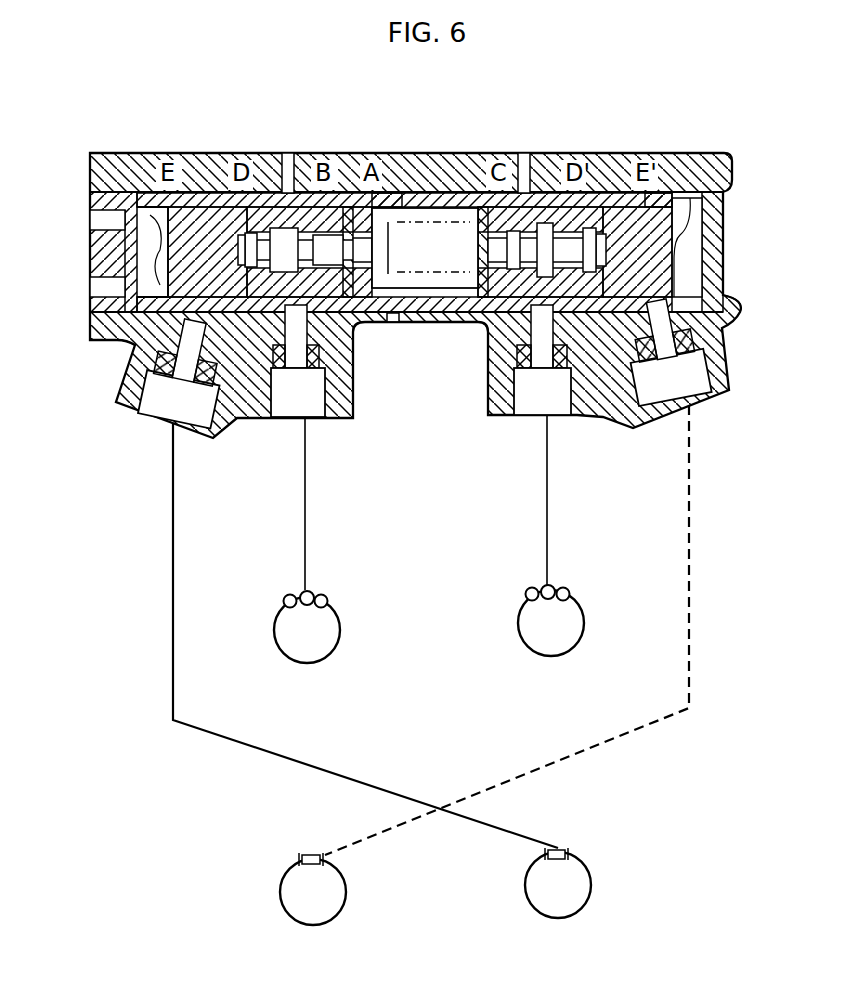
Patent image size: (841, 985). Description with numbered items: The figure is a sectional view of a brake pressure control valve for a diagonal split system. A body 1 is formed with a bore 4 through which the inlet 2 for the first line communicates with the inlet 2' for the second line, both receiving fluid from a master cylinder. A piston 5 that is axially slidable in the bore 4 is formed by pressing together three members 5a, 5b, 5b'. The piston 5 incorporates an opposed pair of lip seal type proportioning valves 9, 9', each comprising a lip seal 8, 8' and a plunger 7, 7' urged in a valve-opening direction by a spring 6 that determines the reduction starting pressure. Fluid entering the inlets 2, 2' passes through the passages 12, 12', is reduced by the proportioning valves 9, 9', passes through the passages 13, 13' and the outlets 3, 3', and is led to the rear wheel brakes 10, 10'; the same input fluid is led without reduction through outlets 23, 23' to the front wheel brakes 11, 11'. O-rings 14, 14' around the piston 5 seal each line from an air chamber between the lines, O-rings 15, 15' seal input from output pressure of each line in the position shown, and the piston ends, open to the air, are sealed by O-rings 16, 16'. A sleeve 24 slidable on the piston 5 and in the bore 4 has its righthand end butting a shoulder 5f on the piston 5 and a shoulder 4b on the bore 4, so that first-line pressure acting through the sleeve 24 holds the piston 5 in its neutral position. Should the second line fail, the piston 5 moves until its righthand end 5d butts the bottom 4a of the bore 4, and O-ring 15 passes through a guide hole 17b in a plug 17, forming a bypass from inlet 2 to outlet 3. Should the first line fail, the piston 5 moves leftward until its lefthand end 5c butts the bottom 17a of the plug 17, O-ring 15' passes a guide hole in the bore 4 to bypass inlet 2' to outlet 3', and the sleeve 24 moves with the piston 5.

The body 1 is at (728, 298).
The inlet for the first line 2 is at (308, 179).
The inlet for the second line 2' is at (545, 180).
The outlet 3 is at (179, 428).
The outlet 3' is at (684, 403).
The bore 4 is at (663, 207).
The bottom of the bore 4a is at (700, 246).
The shoulder on the bore 4b is at (398, 310).
The piston 5 is at (450, 207).
The piston member 5a is at (427, 205).
The piston member 5b is at (270, 194).
The piston member 5b' is at (575, 194).
The lefthand end of the piston 5c is at (153, 200).
The righthand end of the piston 5d is at (700, 207).
The shoulder on the piston 5f is at (400, 207).
The spring 6 is at (467, 323).
The plunger 7 is at (333, 194).
The plunger 7' is at (495, 194).
The lip seal 8 is at (242, 178).
The lip seal 8' is at (583, 179).
The proportioning valve 9 is at (369, 357).
The proportioning valve 9' is at (475, 362).
The rear wheel brake 10 is at (566, 866).
The rear wheel brake 10' is at (313, 872).
The front wheel brake 11 is at (318, 604).
The front wheel brake 11' is at (542, 598).
The passage 12 is at (286, 182).
The passage 12' is at (553, 182).
The passage 13 is at (203, 418).
The passage 13' is at (647, 397).
The O-ring 14 is at (355, 177).
The O-ring 14' is at (502, 184).
The O-ring 15 is at (227, 402).
The O-ring 15' is at (622, 382).
The O-ring 16 is at (108, 398).
The O-ring 16' is at (748, 333).
The plug 17 is at (130, 195).
The bottom of the plug 17a is at (140, 252).
The guide hole 17b is at (133, 287).
The outlet 23 is at (313, 395).
The outlet 23' is at (534, 385).
The sleeve 24 is at (393, 321).